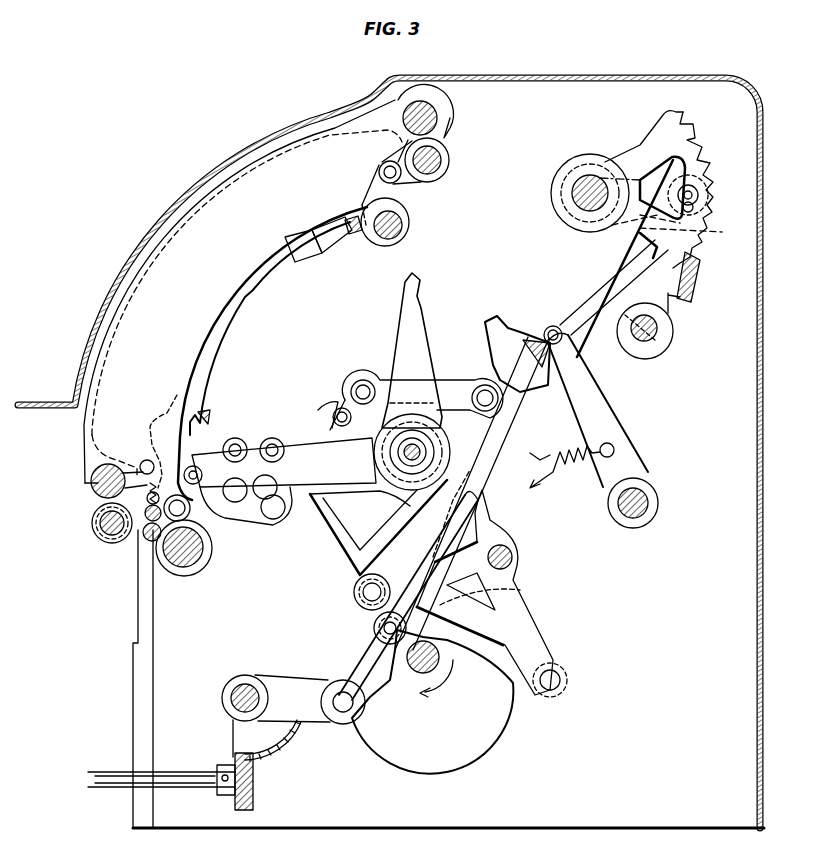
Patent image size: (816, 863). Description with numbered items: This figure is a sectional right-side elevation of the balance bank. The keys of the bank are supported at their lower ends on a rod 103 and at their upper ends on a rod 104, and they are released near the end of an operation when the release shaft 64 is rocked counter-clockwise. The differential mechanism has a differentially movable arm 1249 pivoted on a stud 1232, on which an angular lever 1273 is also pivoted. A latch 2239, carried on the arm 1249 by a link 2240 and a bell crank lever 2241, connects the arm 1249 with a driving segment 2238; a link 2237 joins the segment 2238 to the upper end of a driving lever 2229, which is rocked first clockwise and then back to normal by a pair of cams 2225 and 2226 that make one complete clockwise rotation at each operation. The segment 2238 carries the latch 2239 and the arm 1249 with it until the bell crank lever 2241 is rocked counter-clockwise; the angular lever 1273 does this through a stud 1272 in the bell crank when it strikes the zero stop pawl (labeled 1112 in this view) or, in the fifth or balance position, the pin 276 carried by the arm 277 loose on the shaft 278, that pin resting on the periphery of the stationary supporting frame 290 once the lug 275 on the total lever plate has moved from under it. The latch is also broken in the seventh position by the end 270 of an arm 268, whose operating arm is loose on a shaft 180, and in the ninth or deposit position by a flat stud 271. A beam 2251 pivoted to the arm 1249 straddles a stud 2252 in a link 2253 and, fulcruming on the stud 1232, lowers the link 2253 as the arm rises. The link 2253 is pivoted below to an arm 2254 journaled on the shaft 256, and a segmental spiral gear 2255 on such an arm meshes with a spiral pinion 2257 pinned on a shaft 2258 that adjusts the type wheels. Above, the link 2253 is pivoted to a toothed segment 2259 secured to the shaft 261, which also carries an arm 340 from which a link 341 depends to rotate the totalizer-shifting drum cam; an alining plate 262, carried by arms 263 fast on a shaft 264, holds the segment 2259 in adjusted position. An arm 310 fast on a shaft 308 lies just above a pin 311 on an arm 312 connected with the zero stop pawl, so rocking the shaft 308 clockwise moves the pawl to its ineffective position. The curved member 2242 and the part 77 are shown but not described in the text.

The rod 104 is at (437, 113).
The release shaft 64 is at (441, 160).
The shaft 180 is at (409, 222).
The flat stud 271 is at (352, 236).
The arm 268 is at (326, 252).
The end of arm 270 is at (288, 243).
The curved arm 2242 is at (238, 307).
The stop 1112 is at (212, 405).
The stud 1232 is at (404, 452).
The link 2237 is at (444, 372).
The angular lever 1273 is at (334, 417).
The differentially movable arm 1249 is at (328, 425).
The latch 2239 is at (272, 462).
The bell crank lever 2241 is at (235, 462).
The stud 1272 is at (195, 465).
The link 2240 is at (245, 507).
The driving segment 2238 is at (318, 540).
The beam 2251 is at (386, 497).
The driving lever 2229 is at (490, 520).
The cam 2226 is at (523, 700).
The cam 2225 is at (495, 738).
The shaft 77 is at (415, 665).
The arm 2254 is at (300, 700).
The shaft 256 is at (248, 690).
The segmental spiral gear 2255 is at (282, 745).
The spiral pinion 2257 is at (263, 790).
The shaft 2258 is at (192, 780).
The rod 103 is at (100, 484).
The arm 310 is at (92, 520).
The shaft 308 is at (103, 530).
The pin 311 is at (148, 540).
The arm 312 is at (165, 555).
The shaft 261 is at (590, 175).
The toothed segment 2259 is at (640, 150).
The arm 340 is at (700, 180).
The link 341 is at (706, 243).
The alining plate 262 is at (694, 272).
The arms 263 is at (657, 320).
The shaft 264 is at (660, 336).
The link 2253 is at (630, 260).
The stationary supporting frame 290 is at (500, 325).
The lug 275 is at (528, 340).
The pin 276 is at (556, 326).
The arm 277 is at (617, 392).
The shaft 278 is at (648, 500).
The stud 2252 is at (548, 452).